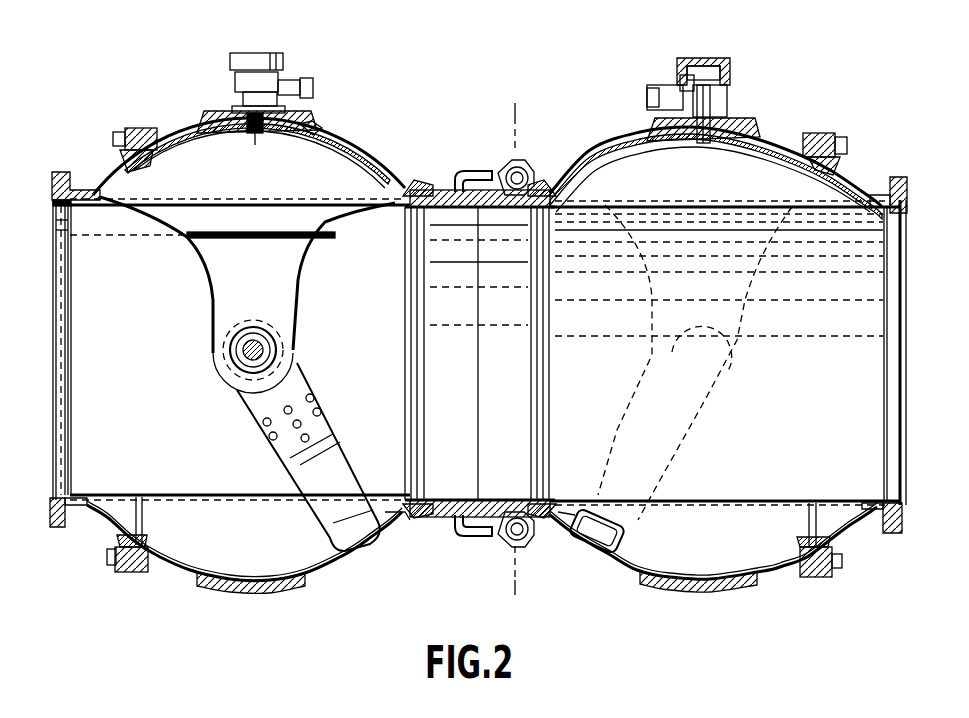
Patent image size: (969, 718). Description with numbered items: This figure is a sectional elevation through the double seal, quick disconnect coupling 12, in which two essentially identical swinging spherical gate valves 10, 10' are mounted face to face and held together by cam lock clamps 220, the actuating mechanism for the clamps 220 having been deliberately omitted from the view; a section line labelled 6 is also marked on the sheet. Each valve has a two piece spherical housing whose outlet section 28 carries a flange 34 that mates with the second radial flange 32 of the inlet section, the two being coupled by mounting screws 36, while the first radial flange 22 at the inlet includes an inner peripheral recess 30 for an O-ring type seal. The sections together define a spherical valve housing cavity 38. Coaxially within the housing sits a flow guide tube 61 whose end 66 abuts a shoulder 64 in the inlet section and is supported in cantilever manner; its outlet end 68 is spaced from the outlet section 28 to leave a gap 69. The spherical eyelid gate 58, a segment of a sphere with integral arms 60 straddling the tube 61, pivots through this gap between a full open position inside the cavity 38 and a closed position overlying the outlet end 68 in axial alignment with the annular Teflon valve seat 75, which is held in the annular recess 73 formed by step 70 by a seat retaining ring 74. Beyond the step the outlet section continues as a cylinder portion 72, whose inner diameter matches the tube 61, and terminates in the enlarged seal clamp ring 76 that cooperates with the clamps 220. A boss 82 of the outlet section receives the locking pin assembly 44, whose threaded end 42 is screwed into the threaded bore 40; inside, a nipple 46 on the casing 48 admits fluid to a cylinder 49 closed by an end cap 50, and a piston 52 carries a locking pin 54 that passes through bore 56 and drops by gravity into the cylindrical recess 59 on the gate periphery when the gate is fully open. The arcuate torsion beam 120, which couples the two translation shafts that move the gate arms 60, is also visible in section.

The section line 6- 6 is at (452, 4).
The swinging spherical gate valve 10 is at (476, 344).
The swinging spherical gate valve 10' is at (488, 327).
The double seal disconnect coupling 12 is at (515, 110).
The first radial flange 22 is at (63, 170).
The outlet section 28 is at (345, 143).
The inner peripheral recess 30 is at (63, 218).
The second radial flange 32 is at (133, 160).
The flange 34 is at (140, 130).
The mounting screws 36 is at (117, 133).
The spherical valve housing cavity 38 is at (266, 556).
The threaded bore 40 is at (264, 130).
The threaded end 42 is at (252, 126).
The locking pin assembly 44 is at (292, 61).
The nipple 46 is at (306, 83).
The casing 48 is at (243, 100).
The cylinder 49 is at (683, 80).
The end cap 50 is at (260, 56).
The piston 52 is at (733, 75).
The locking pin 54 is at (256, 130).
The bore 56 is at (683, 110).
The valve gate 58 is at (330, 218).
The cylindrical recess 59 is at (640, 136).
The arms 60 is at (732, 342).
The flow guide tube 61 is at (620, 215).
The shoulder 64 is at (72, 200).
The end of flow guide tube 66 is at (70, 344).
The outlet end of flow guide tube 68 is at (400, 366).
The gap 69 is at (401, 520).
The step 70 is at (414, 186).
The cylinder portion 72 is at (409, 214).
The annular recess 73 is at (419, 518).
The seat retaining ring 74 is at (424, 504).
The valve seat 75 is at (419, 500).
The seal clamp ring 76 is at (467, 186).
The boss 82 is at (313, 122).
The torsion beam 120 is at (345, 458).
The cam lock clamps 220 is at (496, 148).